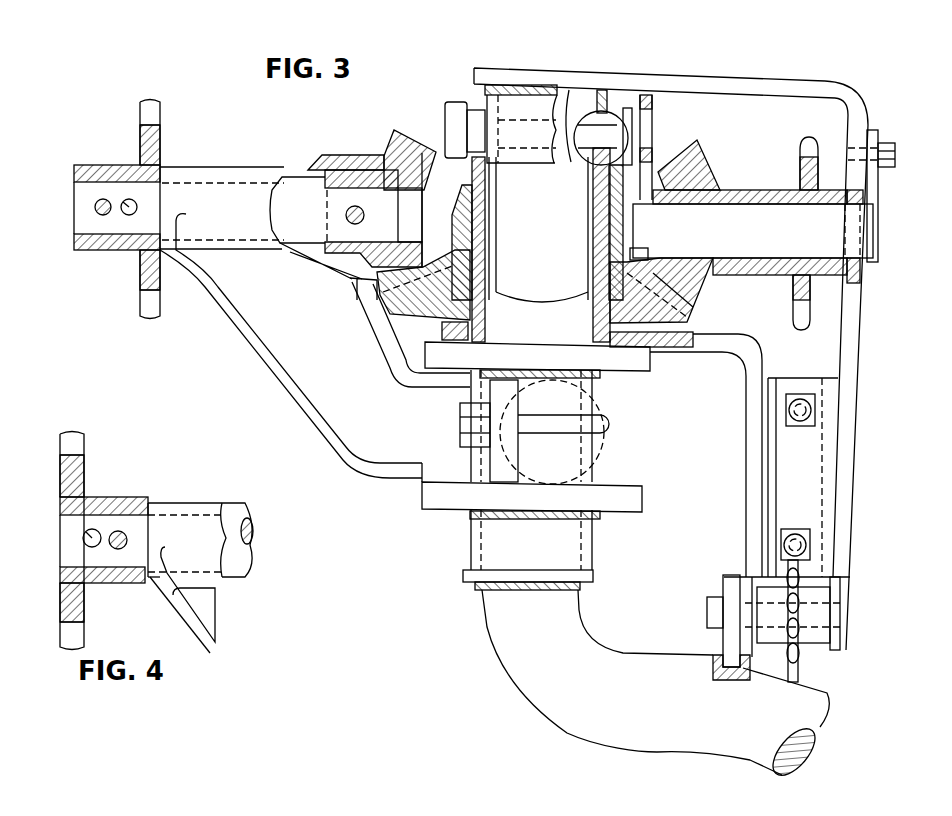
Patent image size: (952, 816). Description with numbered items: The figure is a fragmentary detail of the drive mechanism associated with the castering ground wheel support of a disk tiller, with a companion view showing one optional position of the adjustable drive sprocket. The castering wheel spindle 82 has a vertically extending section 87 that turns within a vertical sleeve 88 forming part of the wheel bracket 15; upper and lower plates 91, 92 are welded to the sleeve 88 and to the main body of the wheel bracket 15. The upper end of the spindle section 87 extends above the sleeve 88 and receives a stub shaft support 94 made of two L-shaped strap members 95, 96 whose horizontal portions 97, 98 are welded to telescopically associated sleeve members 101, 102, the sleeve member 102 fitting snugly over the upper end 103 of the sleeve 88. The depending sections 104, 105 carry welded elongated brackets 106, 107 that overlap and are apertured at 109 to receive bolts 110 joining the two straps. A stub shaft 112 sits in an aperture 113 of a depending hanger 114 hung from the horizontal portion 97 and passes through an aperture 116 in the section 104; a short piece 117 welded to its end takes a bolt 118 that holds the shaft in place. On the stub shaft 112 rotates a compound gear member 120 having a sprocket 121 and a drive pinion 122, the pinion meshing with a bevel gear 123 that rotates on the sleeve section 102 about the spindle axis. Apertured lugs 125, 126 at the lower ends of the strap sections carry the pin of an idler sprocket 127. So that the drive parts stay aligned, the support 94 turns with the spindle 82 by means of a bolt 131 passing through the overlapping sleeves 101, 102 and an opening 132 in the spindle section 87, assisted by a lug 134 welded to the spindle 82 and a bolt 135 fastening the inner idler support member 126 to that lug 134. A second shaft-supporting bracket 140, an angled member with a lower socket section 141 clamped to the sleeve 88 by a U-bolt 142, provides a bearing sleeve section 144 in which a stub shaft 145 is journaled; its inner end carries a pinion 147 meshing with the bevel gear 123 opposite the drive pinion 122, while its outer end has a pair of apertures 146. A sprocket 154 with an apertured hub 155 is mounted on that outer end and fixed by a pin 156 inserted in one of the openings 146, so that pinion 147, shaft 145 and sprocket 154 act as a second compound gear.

In FIG. 3, the wheel bracket 15 is at (568, 432).
In FIG. 3, the castering wheel spindle 82 is at (509, 687).
In FIG. 3, the vertically extending section 87 is at (568, 125).
In FIG. 3, the vertical sleeve 88 is at (596, 202).
In FIG. 3, the upper plate 91 is at (645, 362).
In FIG. 3, the lower plate 92 is at (455, 505).
In FIG. 3, the stub shaft support 94 is at (871, 110).
In FIG. 3, the L-shaped strap member 95 is at (711, 76).
In FIG. 3, the L-shaped strap member 96 is at (742, 393).
In FIG. 3, the horizontal portion 97 is at (669, 80).
In FIG. 3, the horizontal portion 98 is at (445, 333).
In FIG. 3, the sleeve member 101 is at (525, 105).
In FIG. 3, the sleeve member 102 is at (590, 240).
In FIG. 3, the upper end 103 is at (596, 190).
In FIG. 3, the depending section 104 is at (843, 500).
In FIG. 3, the depending section 105 is at (746, 533).
In FIG. 3, the elongated bracket 106 is at (812, 470).
In FIG. 3, the elongated bracket 107 is at (772, 481).
In FIG. 3, the aperture 109 is at (798, 386).
In FIG. 3, the bolt 110 is at (808, 414).
In FIG. 3, the stub shaft 112 is at (733, 215).
In FIG. 3, the aperture 113 is at (641, 254).
In FIG. 3, the depending hanger 114 is at (650, 122).
In FIG. 3, the aperture 116 is at (862, 260).
In FIG. 3, the short piece 117 is at (879, 192).
In FIG. 3, the bolt 118 is at (896, 153).
In FIG. 3, the compound gear member 120 is at (745, 278).
In FIG. 3, the sprocket 121 is at (804, 168).
In FIG. 3, the drive pinion 122 is at (693, 162).
In FIG. 3, the bevel gear 123 is at (470, 269).
In FIG. 3, the apertured lug 125 is at (841, 646).
In FIG. 3, the apertured lug 126 is at (750, 662).
In FIG. 3, the idler sprocket 127 is at (800, 664).
In FIG. 3, the bolt 131 is at (629, 122).
In FIG. 3, the opening 132 is at (584, 150).
In FIG. 3, the lug 134 is at (726, 584).
In FIG. 3, the bolt 135 is at (712, 613).
In FIG. 3, the shaft-supporting bracket 140 is at (264, 392).
In FIG. 4, the shaft-supporting bracket 140 is at (218, 602).
In FIG. 3, the socket section 141 is at (508, 456).
In FIG. 3, the U-bolt 142 is at (603, 433).
In FIG. 3, the bearing sleeve section 144 is at (223, 175).
In FIG. 4, the bearing sleeve section 144 is at (198, 510).
In FIG. 3, the stub shaft 145 is at (290, 197).
In FIG. 4, the stub shaft 145 is at (228, 532).
In FIG. 3, the aperture 146 is at (125, 200).
In FIG. 4, the aperture 146 is at (86, 535).
In FIG. 3, the pinion 147 is at (406, 152).
In FIG. 3, the sprocket 154 is at (139, 140).
In FIG. 4, the sprocket 154 is at (66, 609).
In FIG. 3, the apertured hub 155 is at (92, 243).
In FIG. 4, the apertured hub 155 is at (115, 506).
In FIG. 3, the pin 156 is at (96, 210).
In FIG. 4, the pin 156 is at (118, 550).